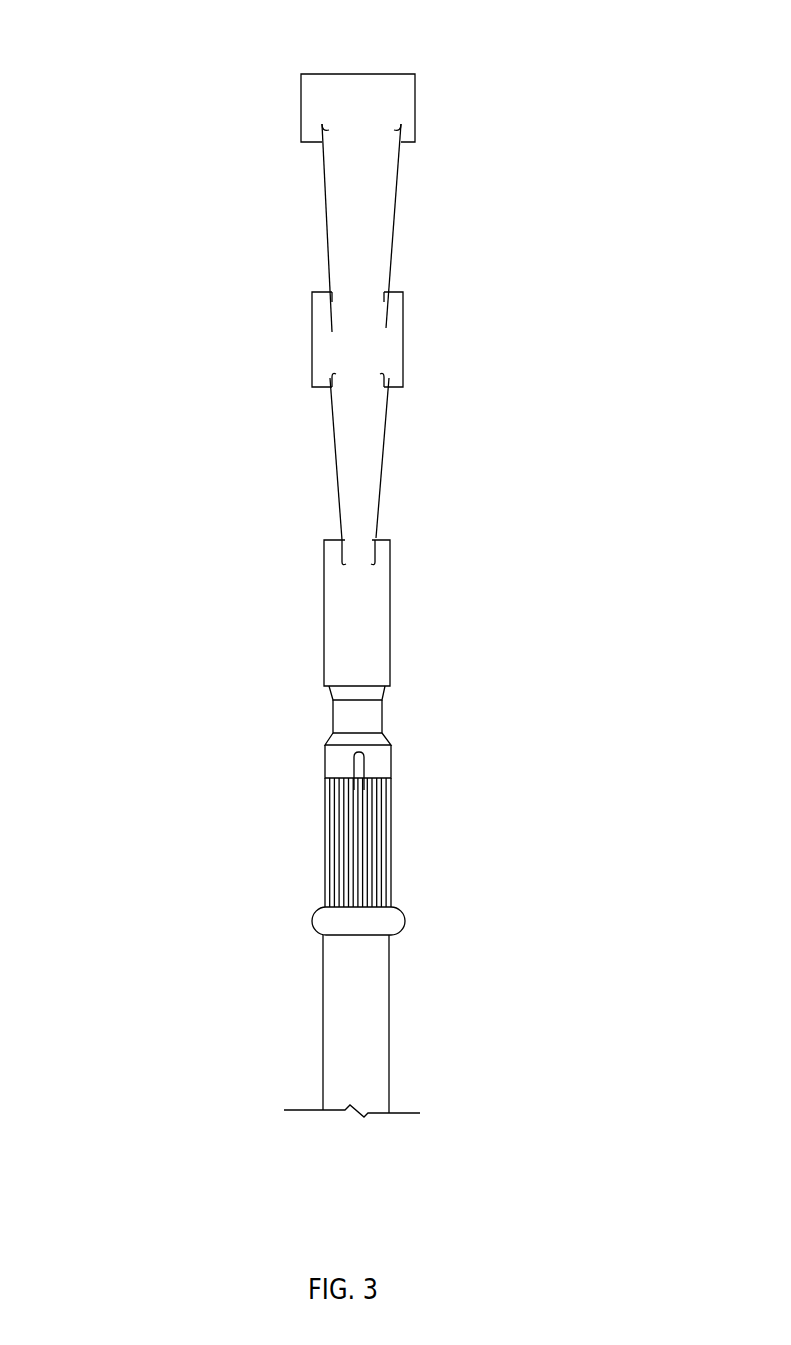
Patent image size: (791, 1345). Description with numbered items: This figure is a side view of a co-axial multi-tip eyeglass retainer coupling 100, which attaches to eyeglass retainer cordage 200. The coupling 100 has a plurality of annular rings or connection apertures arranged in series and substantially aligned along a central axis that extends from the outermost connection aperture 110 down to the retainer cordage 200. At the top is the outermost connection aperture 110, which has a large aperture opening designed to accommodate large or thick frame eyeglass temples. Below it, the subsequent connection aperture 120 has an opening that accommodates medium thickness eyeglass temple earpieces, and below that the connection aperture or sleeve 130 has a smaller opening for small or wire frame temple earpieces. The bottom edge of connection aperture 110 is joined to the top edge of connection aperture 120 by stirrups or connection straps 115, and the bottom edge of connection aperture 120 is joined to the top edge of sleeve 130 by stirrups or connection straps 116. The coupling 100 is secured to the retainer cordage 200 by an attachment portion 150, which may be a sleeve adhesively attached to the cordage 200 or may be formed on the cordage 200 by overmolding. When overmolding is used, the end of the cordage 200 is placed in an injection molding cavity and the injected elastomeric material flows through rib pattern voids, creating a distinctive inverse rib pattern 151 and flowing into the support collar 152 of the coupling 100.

The co-axial multi-tip eyeglass retainer coupling 100 is at (514, 317).
The outermost connection aperture 110 is at (420, 101).
The connection straps 115 is at (402, 201).
The connection straps 116 is at (332, 473).
The subsequent connection aperture 120 is at (312, 337).
The connection aperture or sleeve 130 is at (398, 598).
The attachment portion 150 is at (398, 775).
The inverse rib pattern 151 is at (316, 835).
The support collar 152 is at (307, 917).
The eyeglass retainer cordage 200 is at (398, 1008).